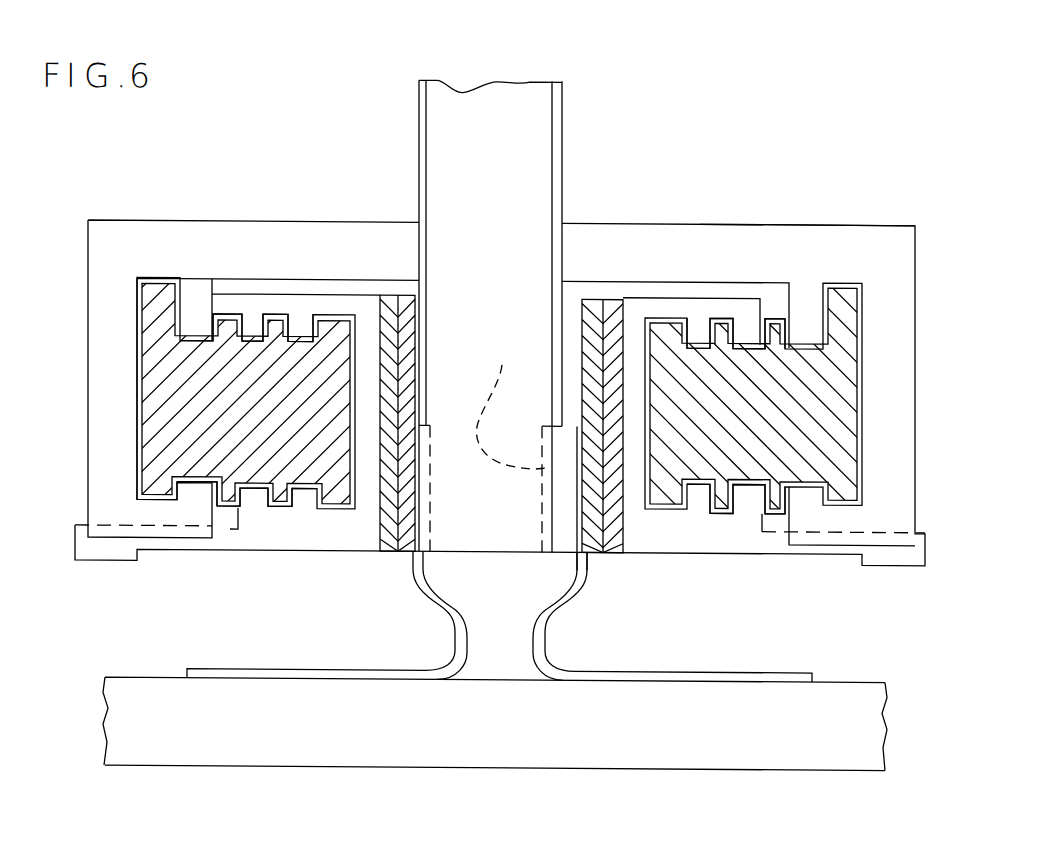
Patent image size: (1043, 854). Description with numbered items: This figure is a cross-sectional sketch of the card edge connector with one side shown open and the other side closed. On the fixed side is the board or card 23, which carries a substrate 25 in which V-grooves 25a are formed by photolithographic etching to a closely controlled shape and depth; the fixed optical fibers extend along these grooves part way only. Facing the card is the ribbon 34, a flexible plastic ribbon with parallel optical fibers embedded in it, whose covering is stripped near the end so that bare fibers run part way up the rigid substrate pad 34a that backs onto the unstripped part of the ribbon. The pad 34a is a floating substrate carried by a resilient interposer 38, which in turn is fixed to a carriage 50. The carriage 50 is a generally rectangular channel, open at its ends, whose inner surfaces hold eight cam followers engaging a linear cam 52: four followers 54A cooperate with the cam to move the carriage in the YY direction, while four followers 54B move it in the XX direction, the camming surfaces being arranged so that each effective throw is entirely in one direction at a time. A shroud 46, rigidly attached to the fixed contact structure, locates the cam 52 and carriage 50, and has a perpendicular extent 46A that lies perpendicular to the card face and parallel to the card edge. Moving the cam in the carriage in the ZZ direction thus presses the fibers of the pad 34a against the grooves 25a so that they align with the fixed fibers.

The board or card 23 is at (517, 142).
The substrate 25 is at (421, 148).
The V-grooves 25a is at (493, 357).
The ribbon 34 is at (275, 670).
The substrate pad 34a is at (590, 568).
The resilient interposer 38 is at (613, 323).
The shroud 46 is at (891, 270).
The extent 46A is at (838, 227).
The carriage 50 is at (693, 307).
The linear cam 52 is at (827, 390).
The cam followers 54A is at (298, 493).
The cam followers 54B is at (250, 318).